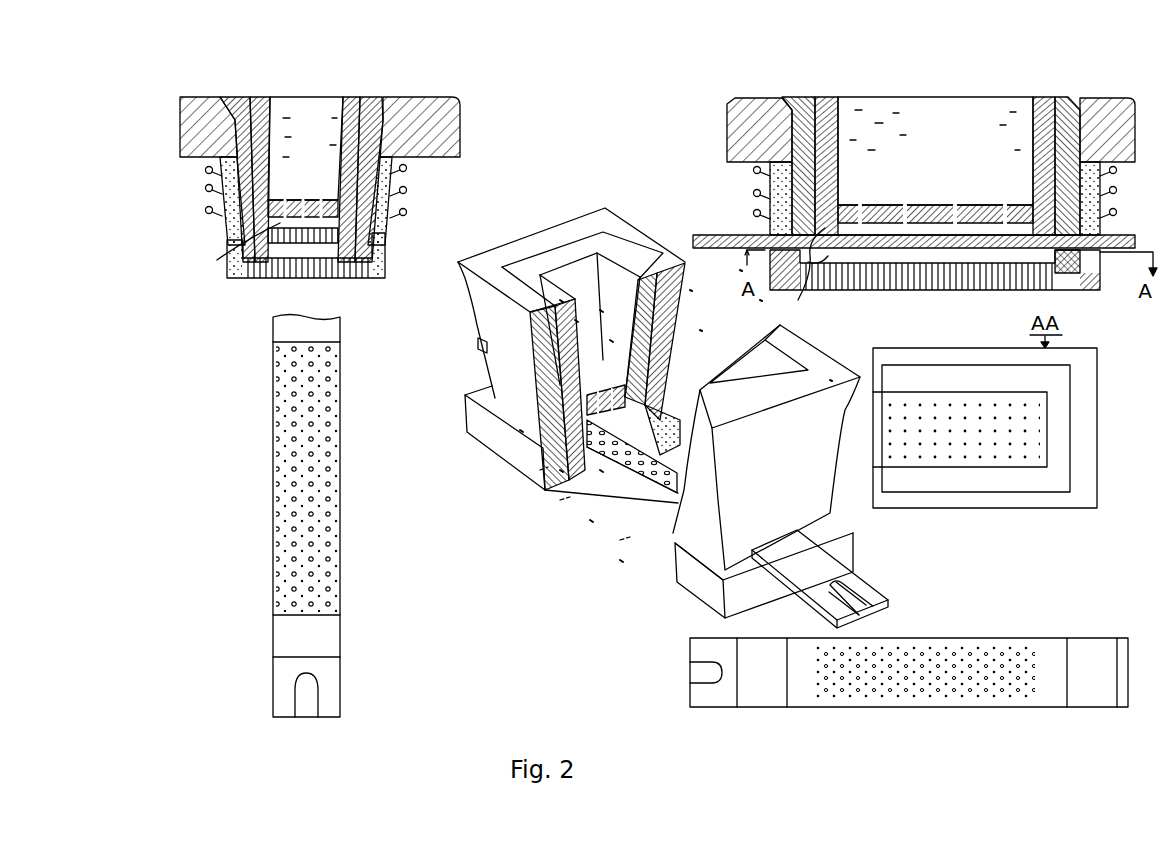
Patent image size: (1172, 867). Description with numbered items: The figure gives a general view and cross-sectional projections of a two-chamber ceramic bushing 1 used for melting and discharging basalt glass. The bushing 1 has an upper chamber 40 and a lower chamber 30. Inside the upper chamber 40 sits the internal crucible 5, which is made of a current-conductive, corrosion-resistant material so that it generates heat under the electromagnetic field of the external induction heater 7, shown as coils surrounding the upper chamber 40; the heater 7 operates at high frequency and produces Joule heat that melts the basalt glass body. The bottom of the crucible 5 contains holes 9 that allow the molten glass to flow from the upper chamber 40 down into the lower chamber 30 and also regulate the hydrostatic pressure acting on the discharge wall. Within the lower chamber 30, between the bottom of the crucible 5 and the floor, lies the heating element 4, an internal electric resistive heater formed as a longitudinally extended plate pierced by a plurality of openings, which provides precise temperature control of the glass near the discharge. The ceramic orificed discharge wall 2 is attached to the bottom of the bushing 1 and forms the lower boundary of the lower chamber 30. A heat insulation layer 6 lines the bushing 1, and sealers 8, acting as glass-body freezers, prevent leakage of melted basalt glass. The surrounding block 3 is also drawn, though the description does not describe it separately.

The ceramic bushing 1 is at (373, 112).
The orificed discharge wall 2 is at (352, 270).
The furnace block (insulation) 3 is at (424, 117).
The heating element 4 is at (258, 386).
The internal crucible 5 is at (353, 108).
The heat insulation layer 6 is at (383, 197).
The external induction heater 7 is at (205, 186).
The sealer 8 is at (1078, 265).
The holes 9 is at (325, 212).
The lower chamber 30 is at (217, 260).
The upper chamber 40 is at (292, 136).